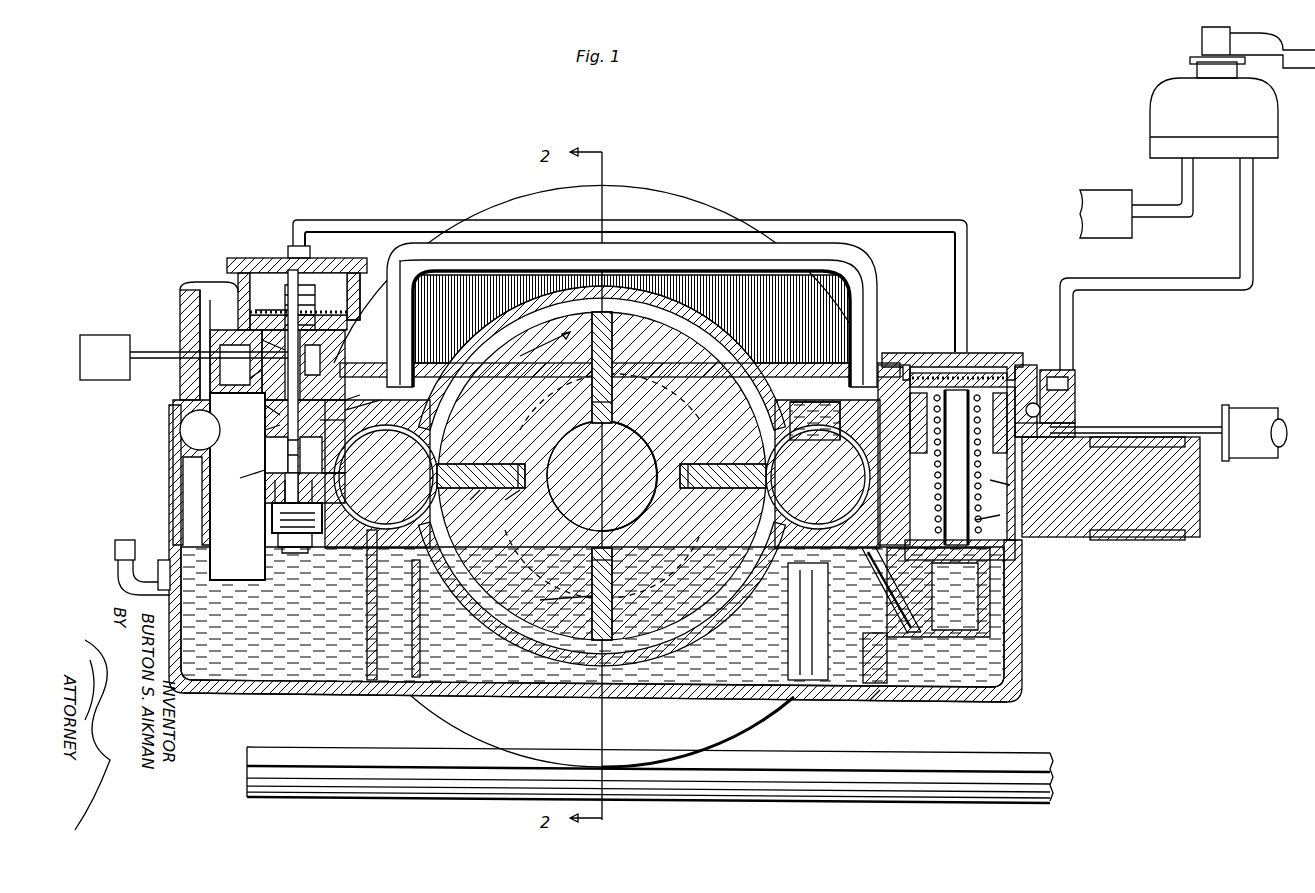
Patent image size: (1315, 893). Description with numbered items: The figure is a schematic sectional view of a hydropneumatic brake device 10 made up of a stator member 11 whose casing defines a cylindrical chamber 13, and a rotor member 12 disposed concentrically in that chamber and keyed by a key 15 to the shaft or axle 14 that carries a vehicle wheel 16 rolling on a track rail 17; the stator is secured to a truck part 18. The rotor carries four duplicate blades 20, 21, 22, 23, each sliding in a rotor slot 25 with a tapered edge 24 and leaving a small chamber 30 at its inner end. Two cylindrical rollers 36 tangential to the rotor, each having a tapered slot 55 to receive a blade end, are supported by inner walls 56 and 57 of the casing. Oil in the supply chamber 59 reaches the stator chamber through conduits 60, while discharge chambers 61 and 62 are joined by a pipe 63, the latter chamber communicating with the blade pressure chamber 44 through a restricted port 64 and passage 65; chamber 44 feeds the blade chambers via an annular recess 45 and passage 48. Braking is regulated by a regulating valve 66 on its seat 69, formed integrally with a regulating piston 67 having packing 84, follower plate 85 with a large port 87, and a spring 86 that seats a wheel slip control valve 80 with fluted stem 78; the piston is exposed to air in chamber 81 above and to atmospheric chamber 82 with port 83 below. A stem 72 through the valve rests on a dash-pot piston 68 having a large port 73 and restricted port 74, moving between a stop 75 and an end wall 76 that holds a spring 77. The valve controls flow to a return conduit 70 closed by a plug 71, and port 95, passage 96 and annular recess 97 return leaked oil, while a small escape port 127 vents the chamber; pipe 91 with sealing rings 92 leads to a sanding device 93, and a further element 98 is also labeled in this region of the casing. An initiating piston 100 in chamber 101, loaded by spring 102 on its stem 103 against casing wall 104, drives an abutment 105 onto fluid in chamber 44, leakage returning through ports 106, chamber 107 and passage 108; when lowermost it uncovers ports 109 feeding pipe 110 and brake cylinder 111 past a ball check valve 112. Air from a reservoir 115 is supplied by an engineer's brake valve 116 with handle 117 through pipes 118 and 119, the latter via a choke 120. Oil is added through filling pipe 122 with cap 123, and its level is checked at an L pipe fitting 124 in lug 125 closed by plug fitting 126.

The hydropneumatic brake device 10 is at (1022, 680).
The stator member 11 is at (775, 356).
The rotor member 12 is at (676, 695).
The cylindrical chamber 13 is at (715, 350).
The shaft or axle 14 is at (640, 540).
The key 15 is at (665, 480).
The vehicle wheel 16 is at (680, 205).
The track rail 17 is at (908, 748).
The vehicle truck part 18 is at (1200, 537).
The rotor blade 20 is at (470, 464).
The rotor blade 21 is at (612, 362).
The rotor blade 22 is at (712, 464).
The rotor blade 23 is at (592, 570).
The tapered edge 24 is at (452, 500).
The rotor slot 25 is at (480, 502).
The blade chamber 30 is at (509, 502).
The roller element 36 is at (360, 510).
The blade pressure chamber 44 is at (970, 610).
The annular recess 45 is at (660, 418).
The passage 48 is at (709, 658).
The tapered slot 55 is at (602, 477).
The inner wall 56 is at (367, 560).
The inner wall 57 is at (806, 430).
The liquid supply chamber 59 is at (322, 697).
The conduit 60 is at (788, 632).
The discharge chamber 61 is at (352, 397).
The discharge chamber 62 is at (957, 455).
The conduit or pipe 63 is at (745, 243).
The restricted port 64 is at (866, 560).
The passage 65 is at (890, 600).
The regulating valve 66 is at (265, 440).
The regulating piston 67 is at (360, 273).
The dash-pot piston 68 is at (272, 515).
The valve seat 69 is at (240, 470).
The return conduit 70 is at (210, 482).
The plug 71 is at (180, 432).
The stem 72 is at (288, 462).
The large port 73 is at (310, 491).
The restricted port 74 is at (265, 490).
The stop 75 is at (274, 491).
The end wall 76 is at (278, 540).
The spring 77 is at (292, 553).
The fluted stem 78 is at (303, 419).
The wheel slip control valve 80 is at (306, 365).
The piston chamber 81 is at (240, 258).
The chamber 82 is at (220, 340).
The port 83 is at (253, 339).
The packing 84 is at (255, 308).
The follower plate 85 is at (298, 294).
The spring 86 is at (298, 293).
The large port 87 is at (300, 302).
The pipe and passage 91 is at (175, 360).
The sealing rings 92 is at (358, 382).
The sanding device 93 is at (80, 338).
The port 95 is at (265, 430).
The passage 96 is at (265, 405).
The annular recess 97 is at (332, 414).
The passage 98 is at (243, 372).
The initiating piston 100 is at (922, 373).
The piston chamber 101 is at (968, 353).
The spring 102 is at (991, 423).
The piston stem 103 is at (945, 420).
The casing wall 104 is at (975, 540).
The piston abutment 105 is at (990, 580).
The ports 106 is at (1002, 512).
The chamber 107 is at (990, 450).
The passage 108 is at (1014, 483).
The ports 109 is at (980, 432).
The pipe and passage 110 is at (1065, 427).
The brake cylinder 111 is at (1248, 408).
The ball check valve 112 is at (1050, 400).
The reservoir 115 is at (1112, 184).
The engineer's brake valve device 116 is at (1270, 122).
The operating handle 117 is at (1295, 40).
The pipe 118 is at (1253, 240).
The pipe 119 is at (822, 220).
The choke or restriction 120 is at (288, 252).
The filling pipe 122 is at (200, 320).
The cap 123 is at (185, 285).
The L pipe fitting 124 is at (118, 580).
The lug 125 is at (160, 560).
The plug fitting 126 is at (122, 540).
The escape port 127 is at (298, 455).